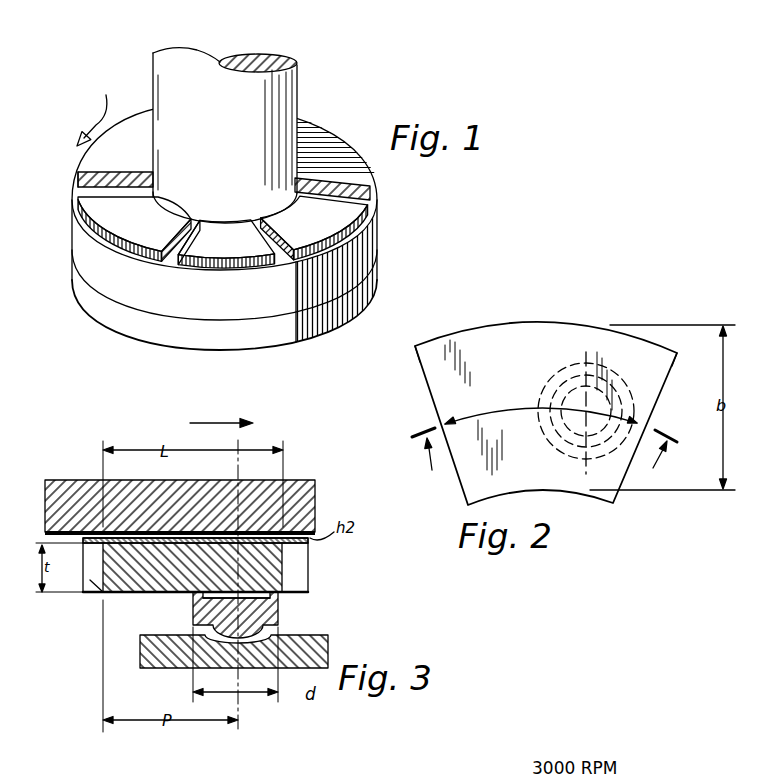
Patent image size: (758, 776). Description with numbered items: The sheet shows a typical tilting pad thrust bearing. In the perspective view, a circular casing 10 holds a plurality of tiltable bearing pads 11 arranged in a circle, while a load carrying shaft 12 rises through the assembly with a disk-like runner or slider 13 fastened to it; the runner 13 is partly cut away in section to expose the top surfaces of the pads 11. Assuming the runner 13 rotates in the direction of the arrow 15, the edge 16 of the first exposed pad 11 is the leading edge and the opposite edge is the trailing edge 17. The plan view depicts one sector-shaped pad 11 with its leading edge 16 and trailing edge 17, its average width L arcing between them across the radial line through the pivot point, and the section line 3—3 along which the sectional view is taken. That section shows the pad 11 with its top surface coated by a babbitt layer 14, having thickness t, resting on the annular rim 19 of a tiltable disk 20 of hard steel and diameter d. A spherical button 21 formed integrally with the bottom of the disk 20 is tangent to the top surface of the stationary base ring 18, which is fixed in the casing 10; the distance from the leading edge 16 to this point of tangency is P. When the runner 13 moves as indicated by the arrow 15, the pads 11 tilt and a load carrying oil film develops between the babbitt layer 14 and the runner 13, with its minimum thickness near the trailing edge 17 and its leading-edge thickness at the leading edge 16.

In FIG. 1, the circular casing 10 is at (376, 246).
In FIG. 1, the tiltable bearing pad 11 is at (118, 215).
In FIG. 2, the tiltable bearing pad 11 is at (414, 387).
In FIG. 3, the tiltable bearing pad 11 is at (188, 571).
In FIG. 1, the load carrying shaft 12 is at (216, 76).
In FIG. 1, the runner 13 is at (323, 140).
In FIG. 3, the runner 13 is at (305, 490).
In FIG. 3, the babbitt layer 14 is at (168, 560).
In FIG. 1, the arrow 15 is at (92, 111).
In FIG. 3, the arrow 15 is at (224, 421).
In FIG. 1, the leading edge 16 is at (98, 185).
In FIG. 2, the leading edge 16 is at (413, 346).
In FIG. 3, the leading edge 16 is at (86, 594).
In FIG. 1, the trailing edge 17 is at (167, 266).
In FIG. 2, the trailing edge 17 is at (663, 388).
In FIG. 3, the trailing edge 17 is at (308, 576).
In FIG. 3, the stationary base ring 18 is at (302, 654).
In FIG. 3, the annular rim 19 is at (280, 597).
In FIG. 2, the tiltable disk 20 is at (575, 362).
In FIG. 3, the tiltable disk 20 is at (282, 613).
In FIG. 2, the spherical button 21 is at (562, 462).
In FIG. 3, the spherical button 21 is at (78, 541).
In FIG. 2, the section line 3— 3 is at (544, 460).